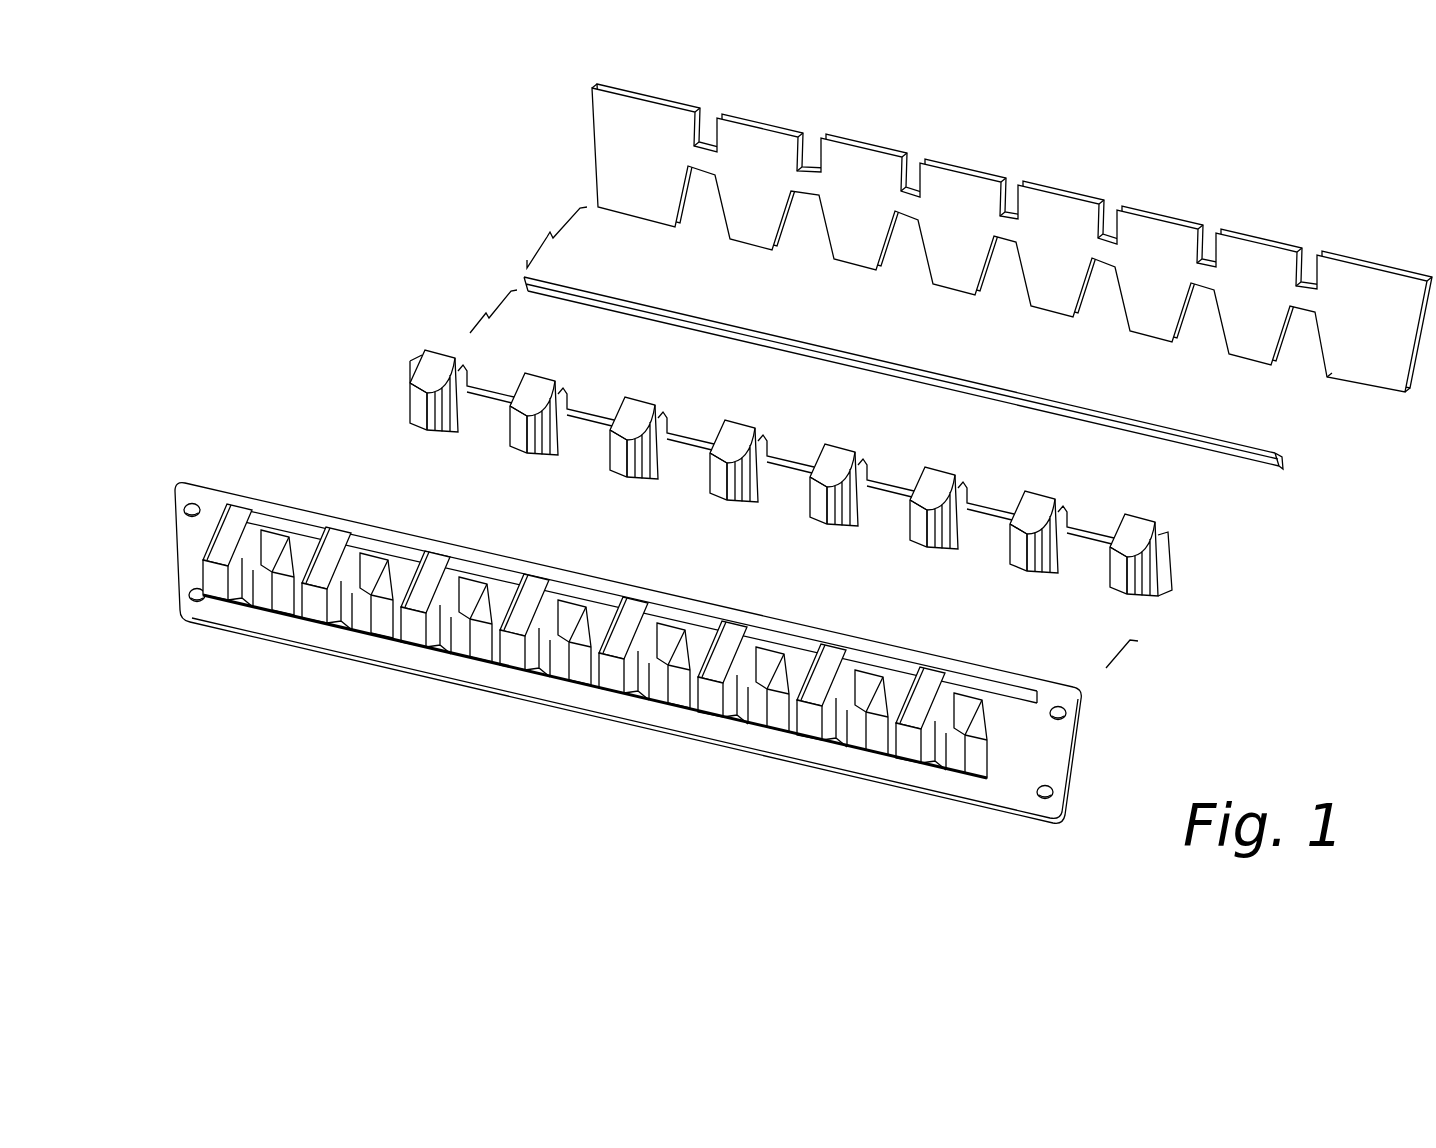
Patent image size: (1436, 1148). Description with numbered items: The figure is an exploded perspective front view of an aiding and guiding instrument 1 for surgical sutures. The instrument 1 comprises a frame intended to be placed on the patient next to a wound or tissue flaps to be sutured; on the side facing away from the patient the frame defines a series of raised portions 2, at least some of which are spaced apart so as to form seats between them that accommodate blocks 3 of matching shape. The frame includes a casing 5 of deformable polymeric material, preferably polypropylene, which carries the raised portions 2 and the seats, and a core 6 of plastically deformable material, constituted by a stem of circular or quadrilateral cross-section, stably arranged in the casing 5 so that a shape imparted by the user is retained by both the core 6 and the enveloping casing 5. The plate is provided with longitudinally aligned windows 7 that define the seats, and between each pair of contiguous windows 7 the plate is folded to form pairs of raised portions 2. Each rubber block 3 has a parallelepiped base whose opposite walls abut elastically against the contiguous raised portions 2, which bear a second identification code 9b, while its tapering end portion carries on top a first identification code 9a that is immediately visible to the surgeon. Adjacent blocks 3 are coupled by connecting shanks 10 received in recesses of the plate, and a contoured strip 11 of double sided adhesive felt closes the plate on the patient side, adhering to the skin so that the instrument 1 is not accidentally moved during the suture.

The aiding and guiding instrument 1 is at (346, 276).
The raised portions 2 is at (233, 547).
The blocks 3 is at (438, 355).
The casing 5 is at (228, 643).
The core 6 is at (884, 352).
The windows 7 is at (253, 610).
The first identification code 9a is at (416, 425).
The second identification code 9b is at (215, 598).
The connecting shank 10 is at (690, 432).
The strip 11 is at (1070, 189).